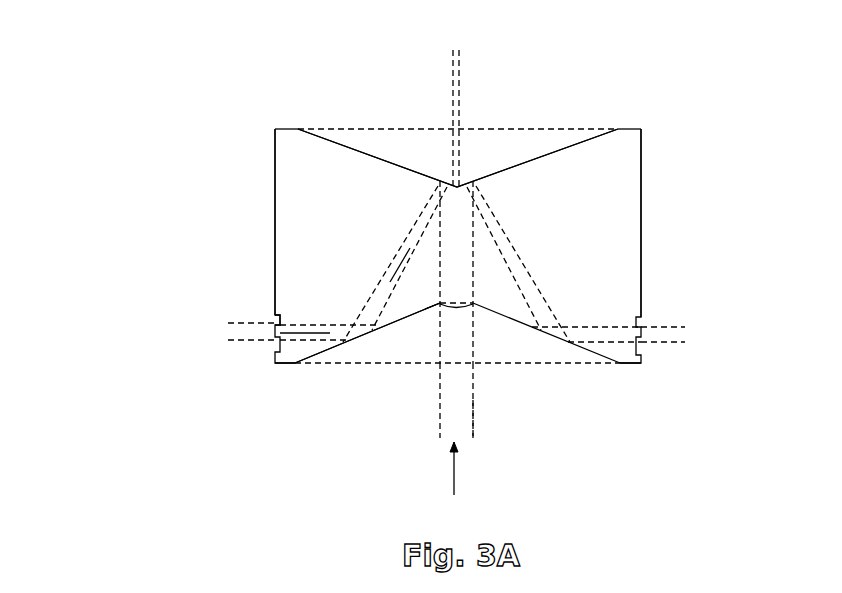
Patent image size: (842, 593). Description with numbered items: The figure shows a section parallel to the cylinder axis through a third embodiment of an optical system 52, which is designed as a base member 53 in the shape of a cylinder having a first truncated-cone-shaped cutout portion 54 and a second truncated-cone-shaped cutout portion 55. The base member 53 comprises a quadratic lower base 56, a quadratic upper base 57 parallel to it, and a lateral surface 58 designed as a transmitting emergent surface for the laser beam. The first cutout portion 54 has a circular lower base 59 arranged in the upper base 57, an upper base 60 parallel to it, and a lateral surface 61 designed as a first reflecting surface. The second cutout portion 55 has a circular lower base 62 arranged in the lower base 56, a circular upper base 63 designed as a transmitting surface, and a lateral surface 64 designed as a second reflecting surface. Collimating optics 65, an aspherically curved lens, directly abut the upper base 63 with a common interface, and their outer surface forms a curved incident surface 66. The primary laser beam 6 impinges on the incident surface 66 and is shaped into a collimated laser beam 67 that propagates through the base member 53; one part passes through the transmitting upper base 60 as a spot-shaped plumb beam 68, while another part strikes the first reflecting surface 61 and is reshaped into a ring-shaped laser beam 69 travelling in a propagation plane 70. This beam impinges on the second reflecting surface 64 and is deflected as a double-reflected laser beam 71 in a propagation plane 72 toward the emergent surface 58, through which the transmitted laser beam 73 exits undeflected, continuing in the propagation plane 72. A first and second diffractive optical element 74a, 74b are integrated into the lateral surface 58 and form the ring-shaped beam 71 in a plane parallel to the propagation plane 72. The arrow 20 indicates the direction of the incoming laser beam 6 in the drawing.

The optical system 52 is at (172, 225).
The base member 53 is at (643, 253).
The first truncated-cone-shaped cutout portion 54 is at (458, 158).
The second truncated-cone-shaped cutout portion 55 is at (457, 333).
The lower base 56 is at (284, 367).
The upper base 57 is at (289, 127).
The lateral surface 58 is at (273, 172).
The lower base 59 is at (391, 127).
The upper base 60 is at (457, 192).
The lateral surface 61 is at (358, 155).
The lower base 62 is at (577, 367).
The upper base 63 is at (477, 300).
The lateral surface 64 is at (387, 329).
The collimating optics 65 is at (441, 308).
The incident surface 66 is at (456, 312).
The collimated laser beam 67 is at (474, 232).
The plumb beam 68 is at (460, 86).
The ring-shaped laser beam 69 is at (411, 229).
The propagation plane 70 is at (398, 259).
The double-reflected laser beam 71 is at (336, 332).
The propagation plane 72 is at (299, 326).
The transmitted laser beam 73 is at (233, 346).
The first diffractive optical element 74a is at (641, 335).
The second diffractive optical element 74b is at (273, 333).
The laser beam 6 is at (471, 423).
The flow direction 20 is at (450, 473).